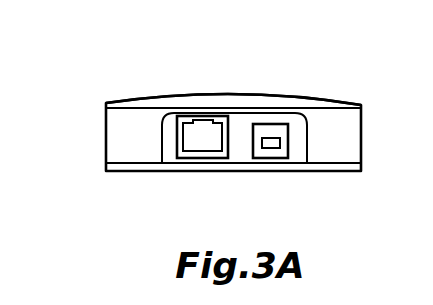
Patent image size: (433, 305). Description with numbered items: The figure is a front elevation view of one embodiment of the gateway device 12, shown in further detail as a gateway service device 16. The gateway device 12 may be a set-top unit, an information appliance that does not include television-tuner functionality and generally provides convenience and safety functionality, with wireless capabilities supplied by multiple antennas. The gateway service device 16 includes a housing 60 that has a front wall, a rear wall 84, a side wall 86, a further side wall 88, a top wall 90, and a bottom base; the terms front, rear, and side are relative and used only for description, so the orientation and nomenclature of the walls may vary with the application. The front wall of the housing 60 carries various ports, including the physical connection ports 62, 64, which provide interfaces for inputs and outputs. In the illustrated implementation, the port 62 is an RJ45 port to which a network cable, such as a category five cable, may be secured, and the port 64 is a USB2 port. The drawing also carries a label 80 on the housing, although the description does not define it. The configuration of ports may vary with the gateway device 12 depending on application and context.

The gateway device 12 is at (234, 121).
The gateway service device 16 is at (117, 96).
The housing 60 is at (106, 163).
The physical connection port 62 is at (200, 152).
The physical connection port 64 is at (270, 152).
The rear panel 80 is at (355, 151).
The rear wall 84 is at (361, 122).
The side wall 86 is at (106, 135).
The side wall 88 is at (234, 95).
The top wall 90 is at (125, 173).